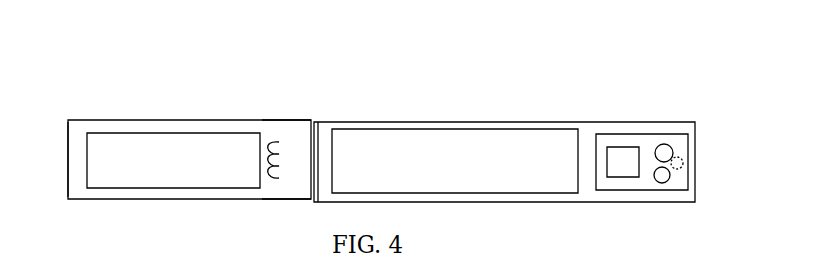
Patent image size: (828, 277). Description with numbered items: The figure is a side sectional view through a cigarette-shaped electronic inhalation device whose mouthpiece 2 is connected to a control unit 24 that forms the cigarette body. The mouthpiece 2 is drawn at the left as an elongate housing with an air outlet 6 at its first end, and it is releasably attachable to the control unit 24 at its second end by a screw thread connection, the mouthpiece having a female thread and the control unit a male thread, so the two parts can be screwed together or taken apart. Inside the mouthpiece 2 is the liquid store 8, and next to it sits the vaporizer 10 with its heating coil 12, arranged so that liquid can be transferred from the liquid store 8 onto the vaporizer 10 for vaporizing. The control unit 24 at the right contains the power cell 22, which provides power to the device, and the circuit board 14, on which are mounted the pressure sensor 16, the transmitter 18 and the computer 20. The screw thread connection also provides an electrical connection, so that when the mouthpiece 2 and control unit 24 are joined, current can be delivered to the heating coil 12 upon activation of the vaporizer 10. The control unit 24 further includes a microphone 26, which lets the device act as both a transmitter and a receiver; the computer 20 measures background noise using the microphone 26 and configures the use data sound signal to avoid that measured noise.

The mouthpiece 2 is at (222, 126).
The air outlet 6 is at (65, 158).
The liquid store 8 is at (161, 151).
The vaporizer 10 is at (273, 130).
The heating coil 12 is at (278, 185).
The circuit board 14 is at (683, 141).
The pressure sensor 16 is at (665, 144).
The transmitter 18 is at (657, 167).
The computer 20 is at (616, 158).
The power cell 22 is at (458, 149).
The control unit 24 is at (542, 128).
The microphone 26 is at (684, 160).